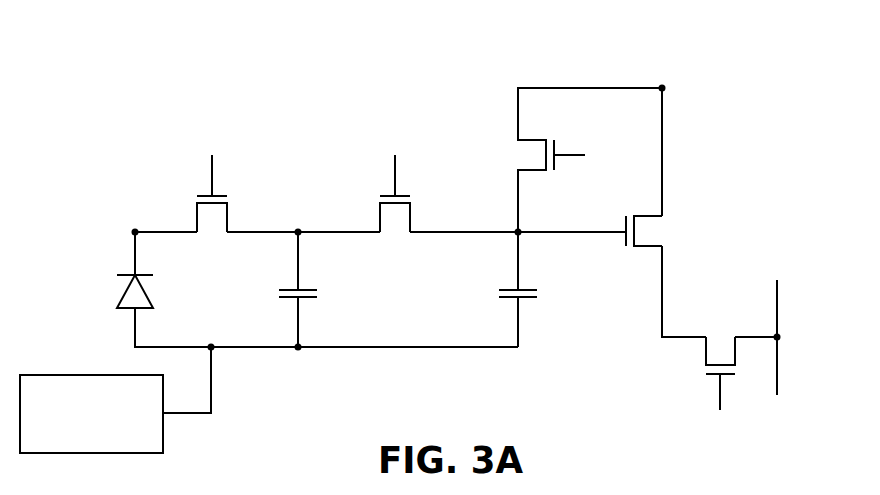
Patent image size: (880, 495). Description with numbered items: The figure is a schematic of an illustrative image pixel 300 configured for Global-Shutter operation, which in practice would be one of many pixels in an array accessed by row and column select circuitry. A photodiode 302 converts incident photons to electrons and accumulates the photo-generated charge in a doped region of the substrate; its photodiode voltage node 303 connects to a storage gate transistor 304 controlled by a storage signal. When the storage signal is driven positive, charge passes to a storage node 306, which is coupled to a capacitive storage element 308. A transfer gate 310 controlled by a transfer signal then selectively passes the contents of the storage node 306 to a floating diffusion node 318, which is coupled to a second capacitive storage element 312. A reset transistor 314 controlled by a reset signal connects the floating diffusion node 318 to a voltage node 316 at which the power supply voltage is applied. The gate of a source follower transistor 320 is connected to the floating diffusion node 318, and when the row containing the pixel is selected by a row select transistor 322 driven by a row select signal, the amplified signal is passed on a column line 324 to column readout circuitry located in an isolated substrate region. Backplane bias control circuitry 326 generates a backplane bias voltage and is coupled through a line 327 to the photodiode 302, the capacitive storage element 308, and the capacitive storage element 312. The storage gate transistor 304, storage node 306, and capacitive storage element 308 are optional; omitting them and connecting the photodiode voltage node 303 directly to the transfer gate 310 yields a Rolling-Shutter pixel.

The image pixel 300 is at (104, 98).
The photodiode 302 is at (130, 297).
The photodiode voltage node 303 is at (133, 231).
The storage gate transistor 304 is at (222, 218).
The storage node 306 is at (302, 228).
The capacitive storage element 308 is at (309, 297).
The transfer gate 310 is at (404, 218).
The capacitive storage element 312 is at (508, 297).
The reset transistor 314 is at (533, 145).
The voltage node 316 is at (664, 88).
The floating diffusion node 318 is at (516, 235).
The source follower transistor 320 is at (647, 242).
The row select transistor 322 is at (706, 350).
The column line 324 is at (808, 300).
The backplane bias control circuitry 326 is at (83, 447).
The line 327 is at (213, 398).